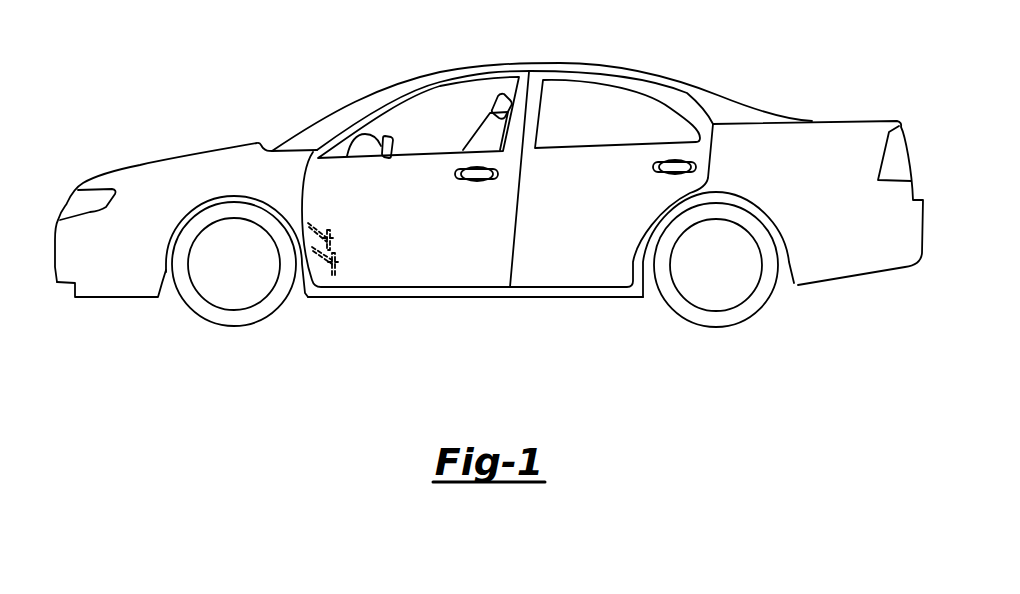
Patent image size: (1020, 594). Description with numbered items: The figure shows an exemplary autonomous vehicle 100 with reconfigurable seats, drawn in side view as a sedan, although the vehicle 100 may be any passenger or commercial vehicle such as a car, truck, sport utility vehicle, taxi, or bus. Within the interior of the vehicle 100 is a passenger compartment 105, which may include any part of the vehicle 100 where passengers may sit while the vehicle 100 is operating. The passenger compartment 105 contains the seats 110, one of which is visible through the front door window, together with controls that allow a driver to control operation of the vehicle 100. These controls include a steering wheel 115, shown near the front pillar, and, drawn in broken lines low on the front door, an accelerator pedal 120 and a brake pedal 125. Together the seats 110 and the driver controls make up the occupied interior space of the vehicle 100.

The vehicle 100 is at (617, 64).
The passenger compartment 105 is at (428, 126).
The seats 110 is at (508, 97).
The steering wheel 115 is at (387, 134).
The accelerator pedal 120 is at (334, 238).
The brake pedal 125 is at (338, 262).